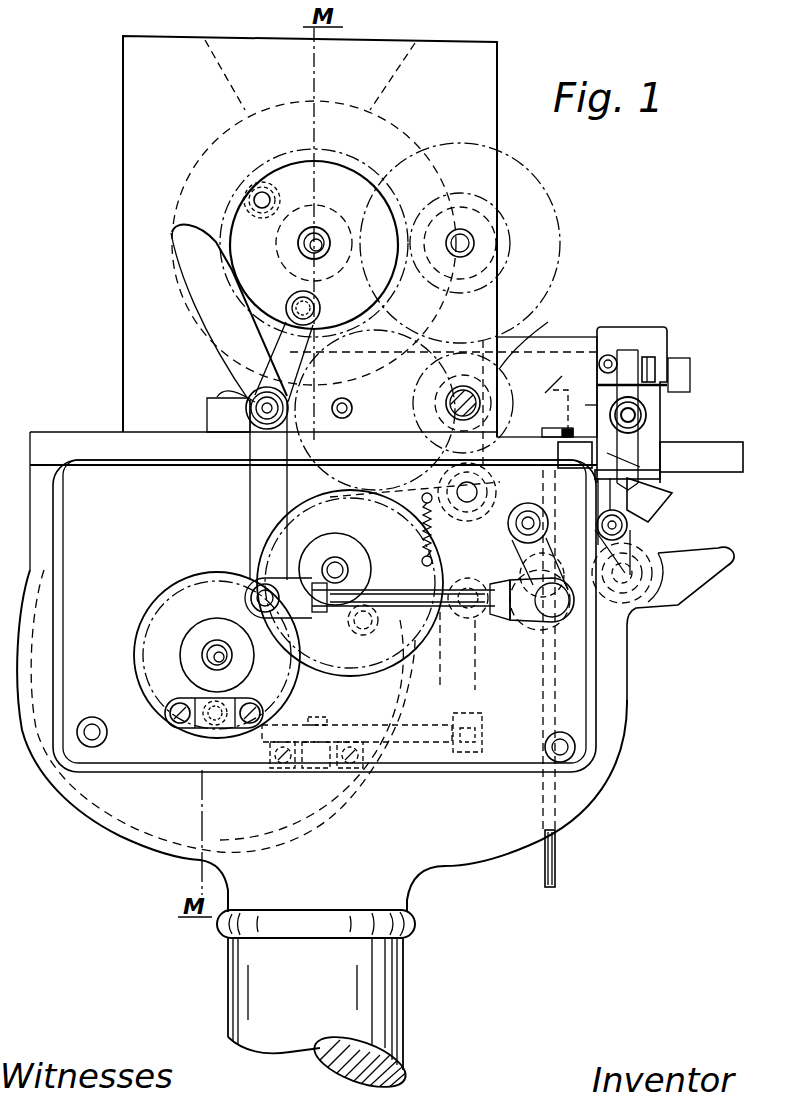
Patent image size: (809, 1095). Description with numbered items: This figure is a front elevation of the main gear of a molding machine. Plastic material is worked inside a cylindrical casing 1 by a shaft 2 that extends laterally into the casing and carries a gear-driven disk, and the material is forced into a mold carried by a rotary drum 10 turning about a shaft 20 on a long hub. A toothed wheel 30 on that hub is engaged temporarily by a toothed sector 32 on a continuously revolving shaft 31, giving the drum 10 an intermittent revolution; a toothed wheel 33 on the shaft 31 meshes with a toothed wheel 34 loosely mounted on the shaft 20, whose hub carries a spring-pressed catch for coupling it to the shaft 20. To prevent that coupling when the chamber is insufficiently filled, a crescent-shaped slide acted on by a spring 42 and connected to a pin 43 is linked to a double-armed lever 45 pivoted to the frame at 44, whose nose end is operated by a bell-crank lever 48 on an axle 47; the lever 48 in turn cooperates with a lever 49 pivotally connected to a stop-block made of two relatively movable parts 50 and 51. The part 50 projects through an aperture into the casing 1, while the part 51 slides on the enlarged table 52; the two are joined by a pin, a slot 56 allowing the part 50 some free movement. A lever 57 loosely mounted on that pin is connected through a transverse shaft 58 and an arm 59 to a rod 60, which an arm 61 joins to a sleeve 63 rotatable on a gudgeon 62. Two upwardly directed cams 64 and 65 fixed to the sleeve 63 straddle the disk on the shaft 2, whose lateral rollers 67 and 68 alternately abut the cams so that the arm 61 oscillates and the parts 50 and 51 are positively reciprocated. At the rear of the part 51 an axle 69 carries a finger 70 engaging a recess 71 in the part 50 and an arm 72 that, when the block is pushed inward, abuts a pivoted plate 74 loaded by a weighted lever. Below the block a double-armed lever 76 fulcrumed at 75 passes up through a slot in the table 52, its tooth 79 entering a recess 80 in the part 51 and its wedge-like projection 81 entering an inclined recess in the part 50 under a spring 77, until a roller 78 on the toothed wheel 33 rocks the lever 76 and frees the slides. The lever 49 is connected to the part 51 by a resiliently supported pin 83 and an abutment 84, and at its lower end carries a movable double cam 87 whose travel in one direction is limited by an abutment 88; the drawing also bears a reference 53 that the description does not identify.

The cylindrical casing 1 is at (123, 208).
The shaft 2 is at (318, 238).
The rotary drum 10 is at (395, 740).
The shaft 20 is at (202, 655).
The toothed wheel 30 is at (295, 650).
The shaft 31 is at (335, 559).
The toothed sector 32 is at (286, 518).
The toothed wheel 33 is at (411, 592).
The toothed wheel 34 is at (168, 601).
The spring 42 is at (238, 700).
The pin 43 is at (182, 726).
The pivot 44 is at (320, 730).
The double-armed lever 45 is at (448, 745).
The axle 47 is at (478, 618).
The bell-crank lever 48 is at (672, 570).
The lever 49 is at (640, 356).
The stop-block part 50 is at (352, 407).
The slidable part 51 is at (547, 377).
The table 52 is at (160, 432).
The gear hub 53 is at (488, 400).
The slot 56 is at (583, 365).
The lever 57 is at (534, 335).
The transverse shaft 58 is at (520, 535).
The arm 59 is at (542, 567).
The rod 60 is at (460, 612).
The arm 61 is at (268, 490).
The gudgeon 62 is at (264, 410).
The sleeve 63 is at (231, 404).
The cam 64 is at (229, 313).
The cam 65 is at (284, 362).
The roller 67 is at (318, 304).
The roller 68 is at (268, 198).
The axle 69 is at (646, 415).
The finger 70 is at (615, 350).
The recess 71 is at (564, 377).
The arm 72 is at (665, 505).
The plate 74 is at (628, 528).
The fulcrum 75 is at (462, 505).
The double-armed lever 76 is at (350, 560).
The spring 77 is at (432, 545).
The roller 78 is at (356, 622).
The tooth 79 is at (555, 421).
The recess 80 is at (575, 455).
The wedge-like projection 81 is at (584, 411).
The resiliently-supported pin 83 is at (655, 370).
The abutment 84 is at (608, 355).
The double cam 87 is at (598, 490).
The abutment 88 is at (690, 480).